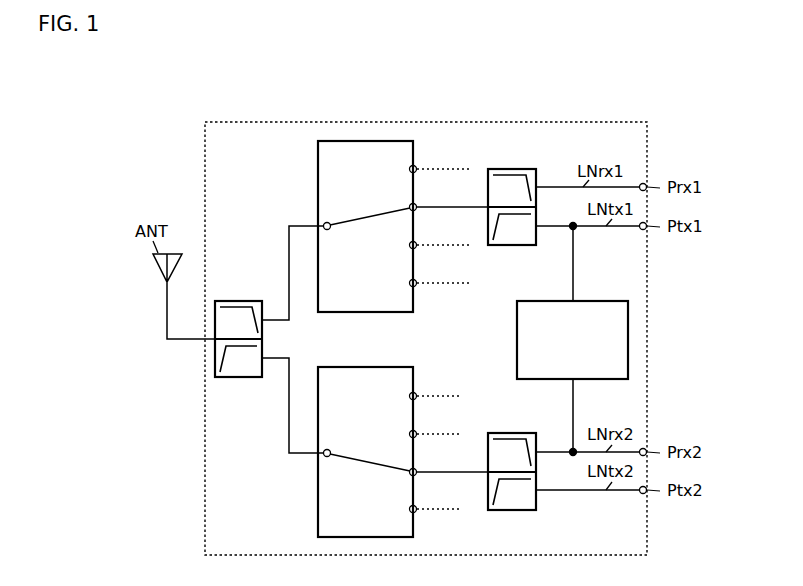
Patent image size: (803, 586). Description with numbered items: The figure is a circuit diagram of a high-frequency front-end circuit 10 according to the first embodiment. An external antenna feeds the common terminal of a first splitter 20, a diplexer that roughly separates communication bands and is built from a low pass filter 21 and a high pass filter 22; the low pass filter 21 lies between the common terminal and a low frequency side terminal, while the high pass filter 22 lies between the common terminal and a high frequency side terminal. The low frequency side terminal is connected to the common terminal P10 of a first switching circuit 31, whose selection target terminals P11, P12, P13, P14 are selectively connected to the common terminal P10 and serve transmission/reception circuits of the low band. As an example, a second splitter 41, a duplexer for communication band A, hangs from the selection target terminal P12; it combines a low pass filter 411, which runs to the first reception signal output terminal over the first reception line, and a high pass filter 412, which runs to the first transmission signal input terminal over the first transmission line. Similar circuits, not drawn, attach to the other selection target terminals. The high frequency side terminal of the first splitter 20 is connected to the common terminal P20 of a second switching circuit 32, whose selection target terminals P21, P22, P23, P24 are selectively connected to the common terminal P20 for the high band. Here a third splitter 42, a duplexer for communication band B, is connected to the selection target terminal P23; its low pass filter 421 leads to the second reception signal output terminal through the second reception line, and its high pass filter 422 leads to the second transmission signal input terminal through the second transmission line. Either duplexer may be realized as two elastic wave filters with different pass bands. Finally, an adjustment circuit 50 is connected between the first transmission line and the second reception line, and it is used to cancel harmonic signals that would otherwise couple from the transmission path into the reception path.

The high-frequency front-end circuit 10 is at (622, 122).
The first splitter 20 is at (244, 314).
The low pass filter 21 is at (256, 300).
The high pass filter 22 is at (254, 378).
The first switching circuit 31 is at (403, 216).
The second switching circuit 32 is at (403, 442).
The second splitter 41 is at (509, 202).
The low pass filter 411 is at (526, 169).
The high pass filter 412 is at (526, 246).
The third splitter 42 is at (509, 466).
The low pass filter 421 is at (526, 433).
The high pass filter 422 is at (526, 510).
The adjustment circuit 50 is at (608, 301).
The common terminal P10 is at (337, 213).
The selection target terminal P11 is at (422, 161).
The selection target terminal P12 is at (431, 196).
The selection target terminal P13 is at (422, 256).
The selection target terminal P14 is at (422, 293).
The common terminal P20 is at (337, 440).
The selection target terminal P21 is at (417, 389).
The selection target terminal P22 is at (417, 424).
The selection target terminal P23 is at (431, 483).
The selection target terminal P24 is at (417, 519).